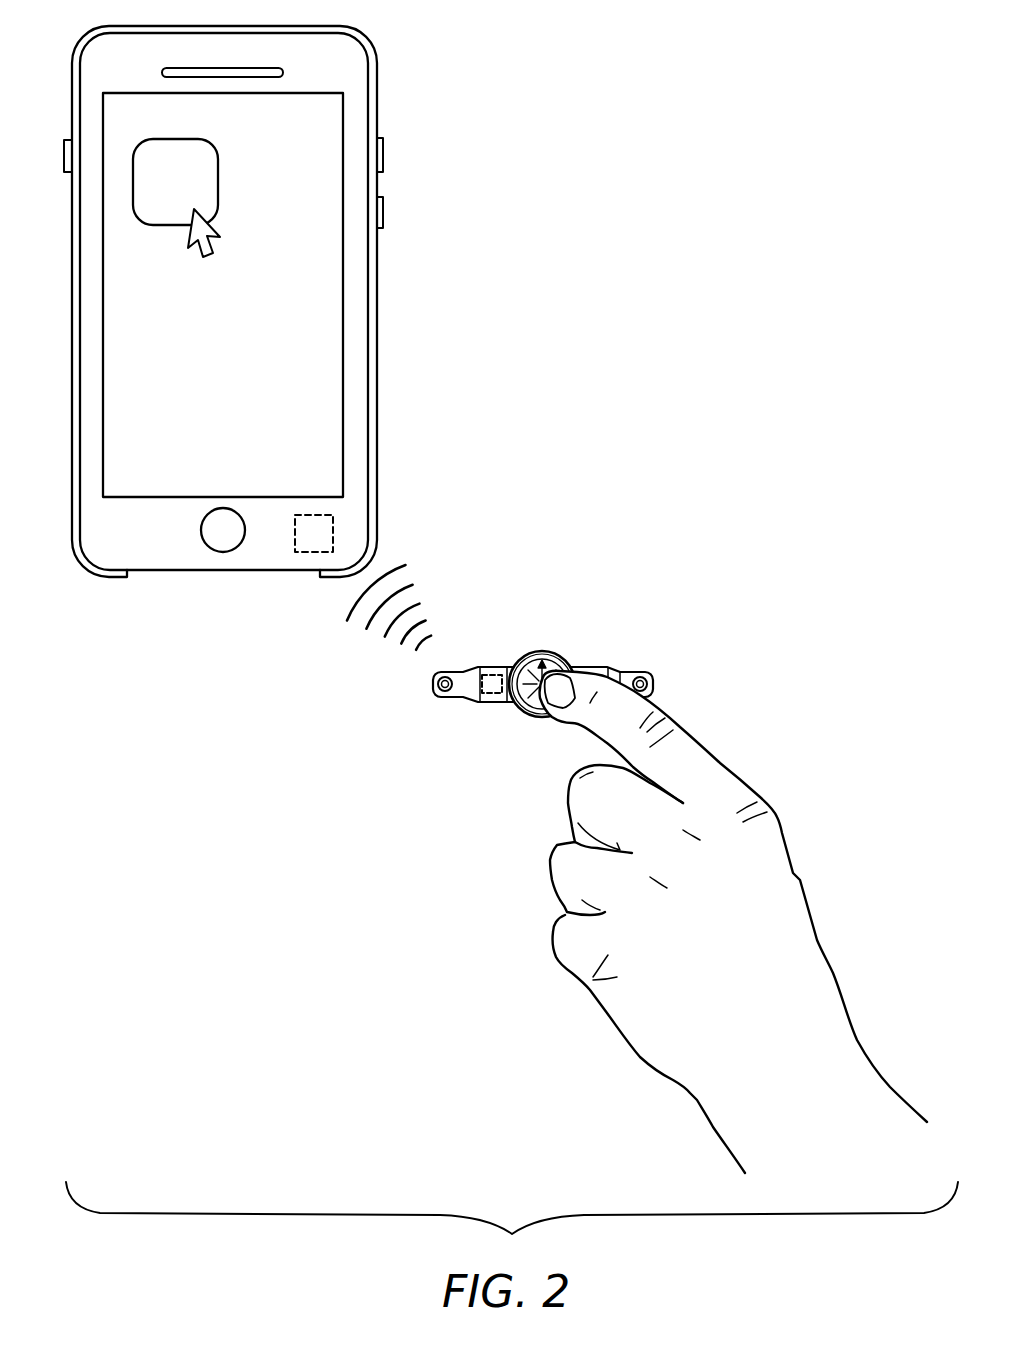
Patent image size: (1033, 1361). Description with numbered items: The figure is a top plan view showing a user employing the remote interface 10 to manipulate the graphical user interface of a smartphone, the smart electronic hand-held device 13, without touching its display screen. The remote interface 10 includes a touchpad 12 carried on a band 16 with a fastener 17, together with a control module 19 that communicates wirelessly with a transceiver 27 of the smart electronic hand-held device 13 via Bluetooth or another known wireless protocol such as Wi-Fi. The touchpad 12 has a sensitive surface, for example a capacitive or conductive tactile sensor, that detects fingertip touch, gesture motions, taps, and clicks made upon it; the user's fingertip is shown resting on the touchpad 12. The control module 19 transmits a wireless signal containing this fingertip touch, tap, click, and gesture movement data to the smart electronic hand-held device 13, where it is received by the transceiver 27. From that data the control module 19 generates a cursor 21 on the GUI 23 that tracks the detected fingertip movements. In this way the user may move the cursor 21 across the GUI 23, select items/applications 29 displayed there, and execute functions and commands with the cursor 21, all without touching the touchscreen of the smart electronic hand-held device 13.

The remote interface 10 is at (552, 628).
The touchpad 12 is at (533, 717).
The smart electronic hand-held device 13 is at (337, 60).
The band 16 is at (622, 677).
The fastener 17 is at (652, 678).
The control module 19 is at (493, 670).
The cursor 21 is at (217, 230).
The GUI 23 is at (343, 362).
The transceiver 27 is at (333, 530).
The items/applications 29 is at (213, 148).